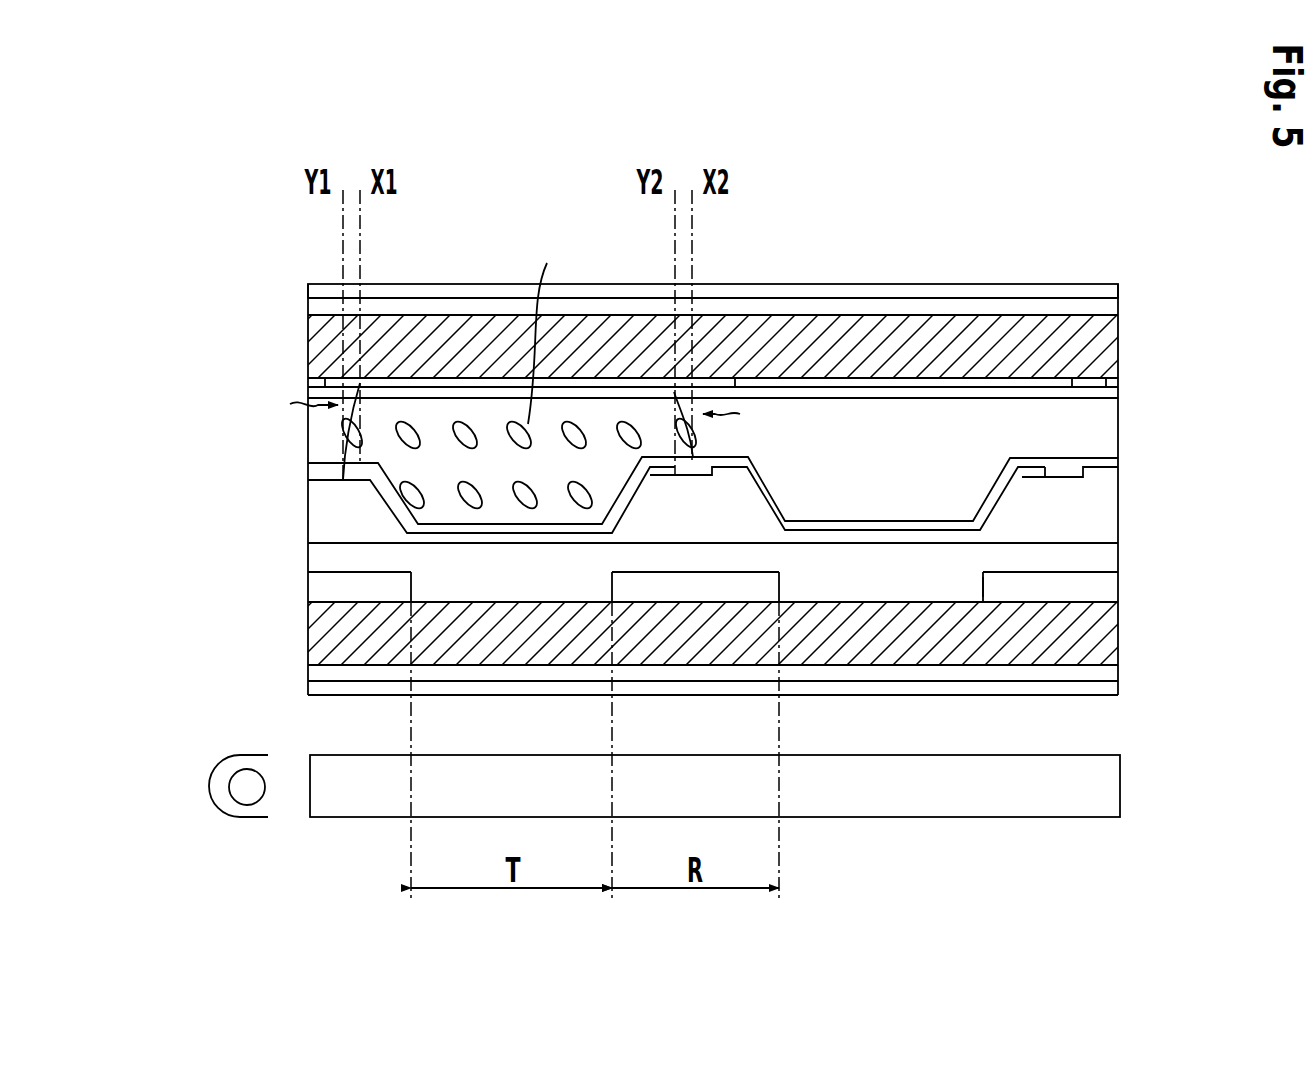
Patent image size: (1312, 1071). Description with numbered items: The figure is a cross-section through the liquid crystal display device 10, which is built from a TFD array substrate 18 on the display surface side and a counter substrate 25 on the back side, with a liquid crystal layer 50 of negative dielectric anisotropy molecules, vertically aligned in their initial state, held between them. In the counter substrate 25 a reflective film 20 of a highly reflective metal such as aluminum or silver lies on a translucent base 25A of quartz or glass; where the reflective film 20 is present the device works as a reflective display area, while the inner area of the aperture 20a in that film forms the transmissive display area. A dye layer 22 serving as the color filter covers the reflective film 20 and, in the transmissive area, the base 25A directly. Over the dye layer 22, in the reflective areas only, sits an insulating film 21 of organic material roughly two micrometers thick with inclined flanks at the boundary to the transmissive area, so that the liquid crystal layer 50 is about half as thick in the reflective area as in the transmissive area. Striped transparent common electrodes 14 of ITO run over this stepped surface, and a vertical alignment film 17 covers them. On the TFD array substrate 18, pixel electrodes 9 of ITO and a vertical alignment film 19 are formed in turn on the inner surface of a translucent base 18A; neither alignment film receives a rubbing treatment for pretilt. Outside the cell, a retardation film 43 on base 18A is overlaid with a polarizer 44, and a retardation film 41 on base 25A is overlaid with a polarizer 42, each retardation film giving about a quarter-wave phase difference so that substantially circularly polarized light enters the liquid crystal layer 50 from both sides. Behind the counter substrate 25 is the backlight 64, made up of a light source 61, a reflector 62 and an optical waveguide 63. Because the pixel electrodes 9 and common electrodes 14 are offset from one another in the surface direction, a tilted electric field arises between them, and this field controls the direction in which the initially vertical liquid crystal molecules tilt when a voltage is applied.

The liquid crystal display device 10 is at (1088, 220).
The TFD array substrate 18 is at (298, 284).
The counter substrate 25 is at (298, 460).
The polarizer 44 is at (1118, 285).
The retardation film 43 is at (1118, 299).
The base 18A is at (1118, 326).
The pixel electrode 9 is at (1060, 379).
The vertical alignment film 19 is at (1118, 394).
The liquid crystal layer 50 is at (1105, 421).
The vertical alignment film 17 is at (1118, 460).
The common electrode 14 is at (1030, 475).
The insulating film 21 is at (1105, 538).
The dye layer 22 is at (1105, 569).
The reflective film 20 is at (1108, 586).
The aperture 20a is at (983, 585).
The base 25A is at (1118, 632).
The retardation film 41 is at (1118, 670).
The polarizer 42 is at (1118, 690).
The backlight 64 is at (675, 817).
The optical waveguide 63 is at (1057, 803).
The reflector 62 is at (212, 797).
The light source 61 is at (247, 792).